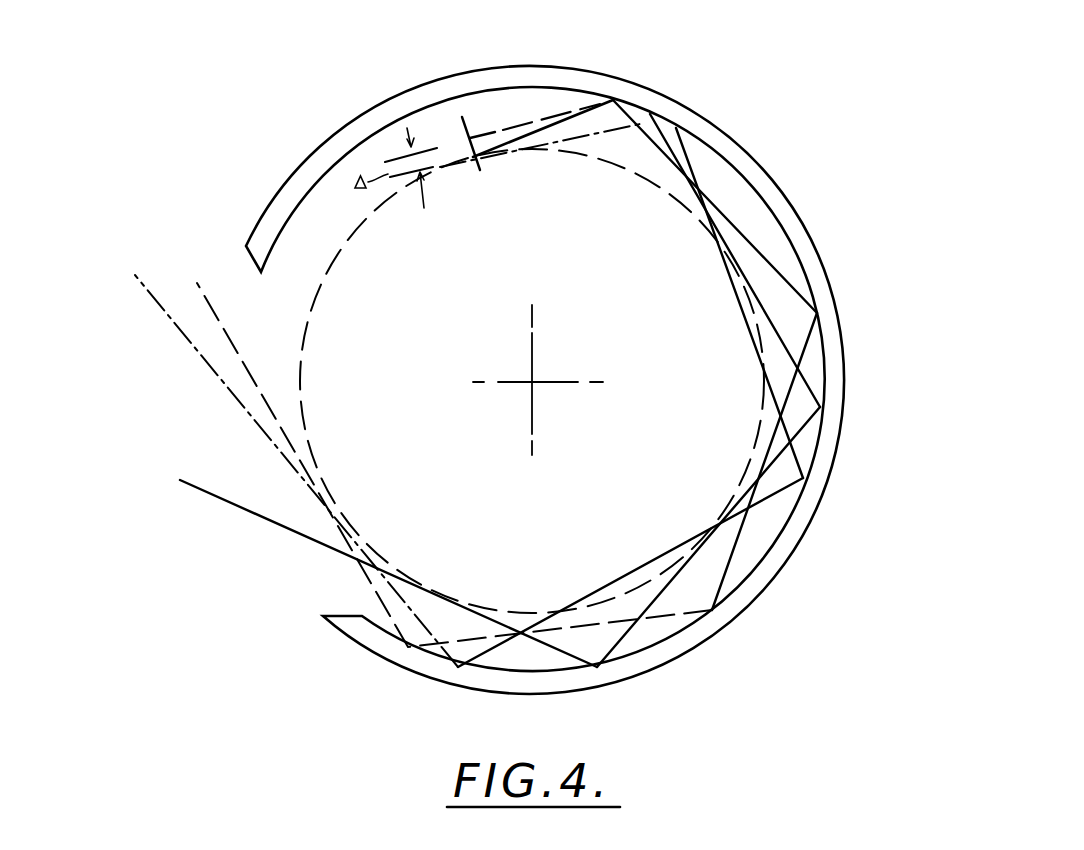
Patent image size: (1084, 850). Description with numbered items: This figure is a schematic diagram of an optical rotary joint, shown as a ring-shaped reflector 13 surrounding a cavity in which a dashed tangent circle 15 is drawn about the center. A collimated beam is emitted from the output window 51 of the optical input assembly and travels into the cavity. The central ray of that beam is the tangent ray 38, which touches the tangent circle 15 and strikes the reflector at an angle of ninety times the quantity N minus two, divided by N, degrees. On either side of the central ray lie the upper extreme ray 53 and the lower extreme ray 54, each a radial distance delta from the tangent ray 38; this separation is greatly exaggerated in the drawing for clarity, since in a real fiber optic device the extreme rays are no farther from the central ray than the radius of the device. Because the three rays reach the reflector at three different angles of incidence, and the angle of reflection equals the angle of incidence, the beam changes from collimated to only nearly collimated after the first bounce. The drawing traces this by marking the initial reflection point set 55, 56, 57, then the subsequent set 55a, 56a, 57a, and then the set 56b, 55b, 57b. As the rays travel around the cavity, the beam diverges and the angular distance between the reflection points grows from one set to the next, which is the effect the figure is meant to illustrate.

The ring housing 13 is at (756, 204).
The tangent circle 15 is at (304, 358).
The tangent ray 38 is at (578, 128).
The output window 51 is at (481, 173).
The upper extreme ray 53 is at (493, 133).
The lower extreme ray 54 is at (522, 158).
The initial reflection point 55 is at (615, 100).
The initial reflection point 56 is at (648, 114).
The initial reflection point 57 is at (662, 124).
The second reflection point 55a is at (818, 313).
The second reflection point 56a is at (821, 407).
The second reflection point 57a is at (804, 480).
The third reflection point 55b is at (714, 612).
The third reflection point 56b is at (598, 668).
The third reflection point 57b is at (458, 668).